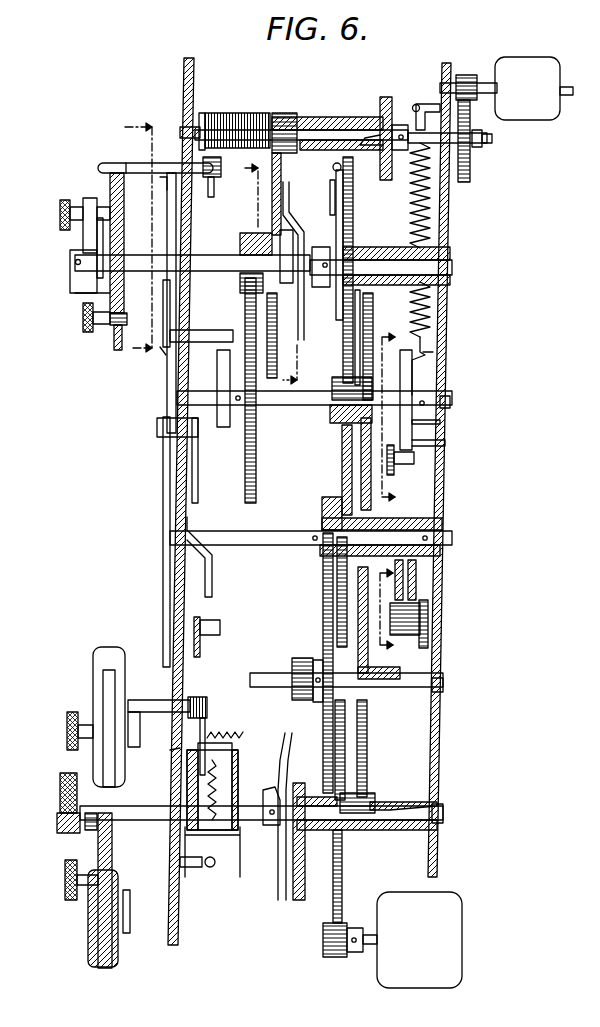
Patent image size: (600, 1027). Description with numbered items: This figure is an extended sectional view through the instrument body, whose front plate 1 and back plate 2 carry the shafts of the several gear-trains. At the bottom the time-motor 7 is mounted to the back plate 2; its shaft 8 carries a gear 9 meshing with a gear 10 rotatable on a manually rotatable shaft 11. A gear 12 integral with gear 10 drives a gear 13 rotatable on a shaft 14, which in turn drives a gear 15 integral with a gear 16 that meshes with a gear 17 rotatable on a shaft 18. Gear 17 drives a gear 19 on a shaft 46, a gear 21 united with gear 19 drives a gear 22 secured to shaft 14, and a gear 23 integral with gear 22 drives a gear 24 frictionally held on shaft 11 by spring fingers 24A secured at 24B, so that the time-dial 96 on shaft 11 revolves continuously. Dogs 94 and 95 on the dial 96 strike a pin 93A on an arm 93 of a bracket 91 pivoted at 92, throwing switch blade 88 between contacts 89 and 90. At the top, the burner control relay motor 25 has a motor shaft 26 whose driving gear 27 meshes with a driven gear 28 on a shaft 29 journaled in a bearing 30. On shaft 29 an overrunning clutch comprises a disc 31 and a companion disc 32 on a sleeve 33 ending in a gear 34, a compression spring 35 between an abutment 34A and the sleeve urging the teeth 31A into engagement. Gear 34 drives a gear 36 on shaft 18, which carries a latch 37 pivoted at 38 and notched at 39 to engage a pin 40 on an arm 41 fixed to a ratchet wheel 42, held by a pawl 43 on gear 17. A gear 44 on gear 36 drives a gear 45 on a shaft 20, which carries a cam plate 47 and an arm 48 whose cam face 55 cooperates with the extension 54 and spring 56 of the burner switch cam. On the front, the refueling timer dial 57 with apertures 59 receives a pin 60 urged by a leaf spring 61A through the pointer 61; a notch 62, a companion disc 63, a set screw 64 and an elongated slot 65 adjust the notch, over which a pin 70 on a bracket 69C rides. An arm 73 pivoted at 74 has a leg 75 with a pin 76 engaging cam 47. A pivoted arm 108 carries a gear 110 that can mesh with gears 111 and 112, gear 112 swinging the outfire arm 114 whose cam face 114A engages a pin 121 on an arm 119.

The front plate 1 is at (172, 945).
The back plate 2 is at (437, 868).
The time-motor 7 is at (419, 940).
The shaft 8 is at (362, 955).
The gear 9 is at (325, 968).
The gear 10 is at (342, 890).
The shaft 11 is at (455, 812).
The gear 12 is at (375, 793).
The gear 13 is at (367, 750).
The shaft 14 is at (443, 686).
The gear 15 is at (361, 476).
The gear 16 is at (332, 418).
The gear 17 is at (354, 212).
The shaft 18 is at (452, 268).
The gear 19 is at (342, 452).
The shaft 20 is at (450, 403).
The gear 21 is at (322, 500).
The gear 22 is at (323, 612).
The gear 23 is at (298, 660).
The gear 24 is at (293, 897).
The spring fingers 24A is at (283, 768).
The securing point of spring fingers 24B is at (266, 790).
The burner control relay motor 25 is at (534, 88).
The motor shaft 26 is at (487, 82).
The driving gear 27 is at (464, 74).
The driven gear 28 is at (470, 173).
The shaft 29 is at (493, 139).
The bearing 30 is at (185, 126).
The disc 31 is at (398, 124).
The teeth 31A is at (372, 134).
The companion disc 32 is at (380, 100).
The sleeve 33 is at (338, 116).
The gear 34 is at (290, 116).
The abutment 34A is at (205, 113).
The compression spring 35 is at (248, 115).
The gear 36 is at (272, 158).
The latch 37 is at (293, 218).
The pivot 38 is at (333, 168).
The notch 39 is at (355, 340).
The pin 40 is at (362, 356).
The arm 41 is at (314, 246).
The ratchet wheel 42 is at (343, 240).
The pawl 43 is at (330, 190).
The gear 44 is at (242, 233).
The gear 45 is at (245, 312).
The shaft 46 is at (452, 537).
The cam plate 47 is at (222, 365).
The arm 48 is at (425, 370).
The extension 54 is at (414, 458).
The cam face 55 is at (445, 427).
The spring 56 is at (433, 220).
The refueling timer dial 57 is at (112, 300).
The apertures 59 is at (124, 200).
The pin 60 is at (99, 197).
The pointer 61 is at (82, 192).
The leaf spring 61A is at (97, 235).
The notch 62 is at (113, 335).
The companion disc 63 is at (126, 162).
The set screw 64 is at (83, 317).
The elongated slot 65 is at (127, 304).
The bracket 69C is at (213, 197).
The pin 70 is at (104, 162).
The arm 73 is at (170, 172).
The pivot 74 is at (163, 305).
The leg 75 is at (163, 352).
The pin 76 is at (205, 329).
The switch blade 88 is at (215, 855).
The contact 89 is at (193, 867).
The contact 90 is at (215, 864).
The bracket 91 is at (238, 747).
The pivot 92 is at (170, 750).
The arm 93 is at (208, 722).
The pin 93A is at (152, 700).
The pin or dog 94 is at (130, 890).
The pin or dog 95 is at (140, 725).
The time-dial 96 is at (103, 687).
The arm 108 is at (428, 644).
The gear 110 is at (410, 623).
The gear 111 is at (403, 570).
The gear 112 is at (416, 588).
The arm 114 is at (163, 470).
The cam face 114A is at (213, 583).
The arm 119 is at (200, 650).
The pin 121 is at (221, 618).